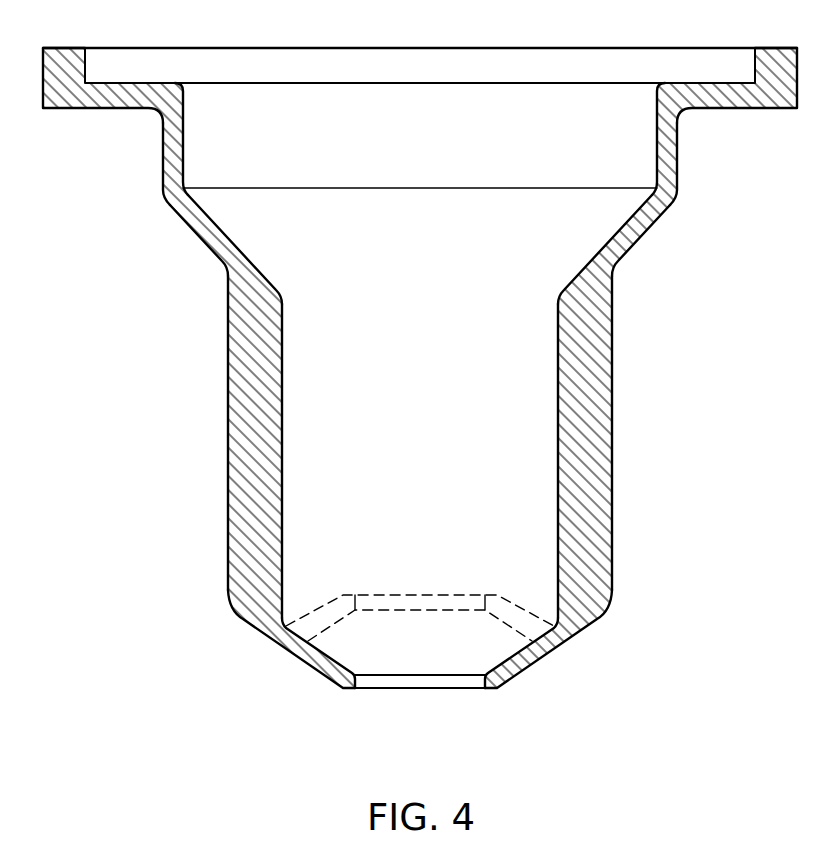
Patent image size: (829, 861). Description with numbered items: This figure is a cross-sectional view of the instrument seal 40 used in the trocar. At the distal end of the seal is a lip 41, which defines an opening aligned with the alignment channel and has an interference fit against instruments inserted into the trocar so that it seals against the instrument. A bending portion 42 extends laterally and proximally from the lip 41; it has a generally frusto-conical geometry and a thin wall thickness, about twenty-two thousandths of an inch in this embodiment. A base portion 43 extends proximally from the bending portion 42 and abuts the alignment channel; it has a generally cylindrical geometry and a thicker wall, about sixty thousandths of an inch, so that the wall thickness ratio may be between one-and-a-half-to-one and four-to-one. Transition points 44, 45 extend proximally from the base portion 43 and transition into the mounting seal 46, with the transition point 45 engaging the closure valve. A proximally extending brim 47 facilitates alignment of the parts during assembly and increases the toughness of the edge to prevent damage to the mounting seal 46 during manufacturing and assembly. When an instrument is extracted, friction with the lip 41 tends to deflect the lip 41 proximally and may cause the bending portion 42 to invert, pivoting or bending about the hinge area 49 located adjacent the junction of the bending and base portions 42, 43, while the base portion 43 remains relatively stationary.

The instrument seal 40 is at (410, 374).
The lip 41 is at (364, 678).
The bending portion 42 is at (310, 667).
The base portion 43 is at (228, 524).
The transition point 44 is at (220, 228).
The transition point 45 is at (183, 156).
The mounting seal 46 is at (121, 83).
The proximally extending brim 47 is at (43, 96).
The hinge area 49 is at (285, 627).